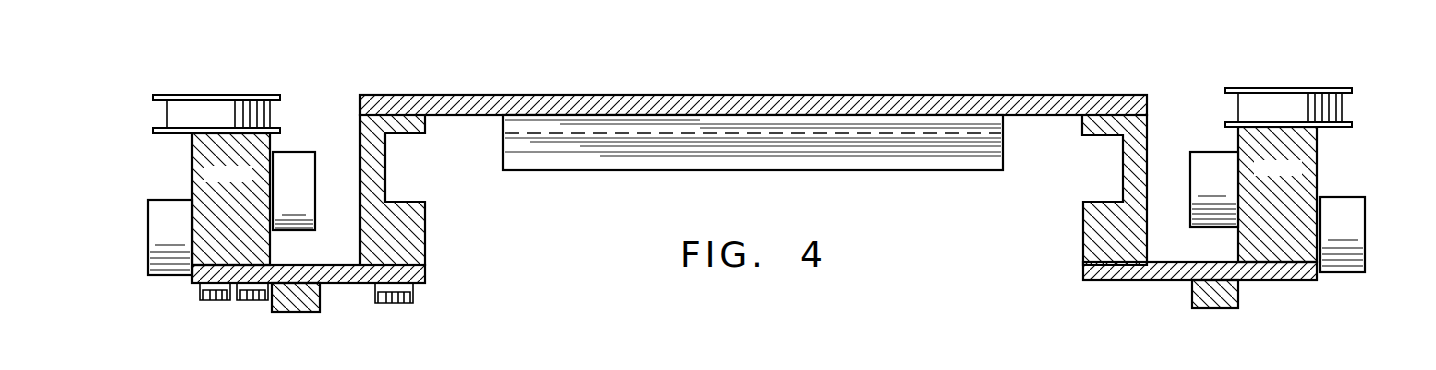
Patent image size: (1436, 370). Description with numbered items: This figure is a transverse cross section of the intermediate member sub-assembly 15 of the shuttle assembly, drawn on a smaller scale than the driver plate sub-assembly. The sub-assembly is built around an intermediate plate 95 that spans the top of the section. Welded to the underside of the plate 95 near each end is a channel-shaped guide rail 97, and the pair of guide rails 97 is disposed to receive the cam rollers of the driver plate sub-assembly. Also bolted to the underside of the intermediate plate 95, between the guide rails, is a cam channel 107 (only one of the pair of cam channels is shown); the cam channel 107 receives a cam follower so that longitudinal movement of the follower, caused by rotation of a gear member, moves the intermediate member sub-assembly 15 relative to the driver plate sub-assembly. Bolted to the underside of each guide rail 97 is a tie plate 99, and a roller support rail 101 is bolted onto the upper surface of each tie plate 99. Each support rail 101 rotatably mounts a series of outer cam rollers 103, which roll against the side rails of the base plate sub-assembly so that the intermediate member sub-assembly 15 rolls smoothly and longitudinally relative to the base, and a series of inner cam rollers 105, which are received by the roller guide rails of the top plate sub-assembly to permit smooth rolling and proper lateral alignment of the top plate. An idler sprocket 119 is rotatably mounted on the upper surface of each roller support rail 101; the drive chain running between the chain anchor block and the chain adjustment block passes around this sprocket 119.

The intermediate member sub-assembly 15 is at (708, 82).
The intermediate plate 95 is at (915, 100).
The channel-shaped guide rail 97 is at (410, 247).
The tie plate 99 is at (345, 275).
The roller support rail 101 is at (754, 196).
The outer cam roller 103 is at (155, 230).
The inner cam roller 105 is at (290, 165).
The cam channel 107 is at (893, 158).
The idler sprocket 119 is at (212, 108).